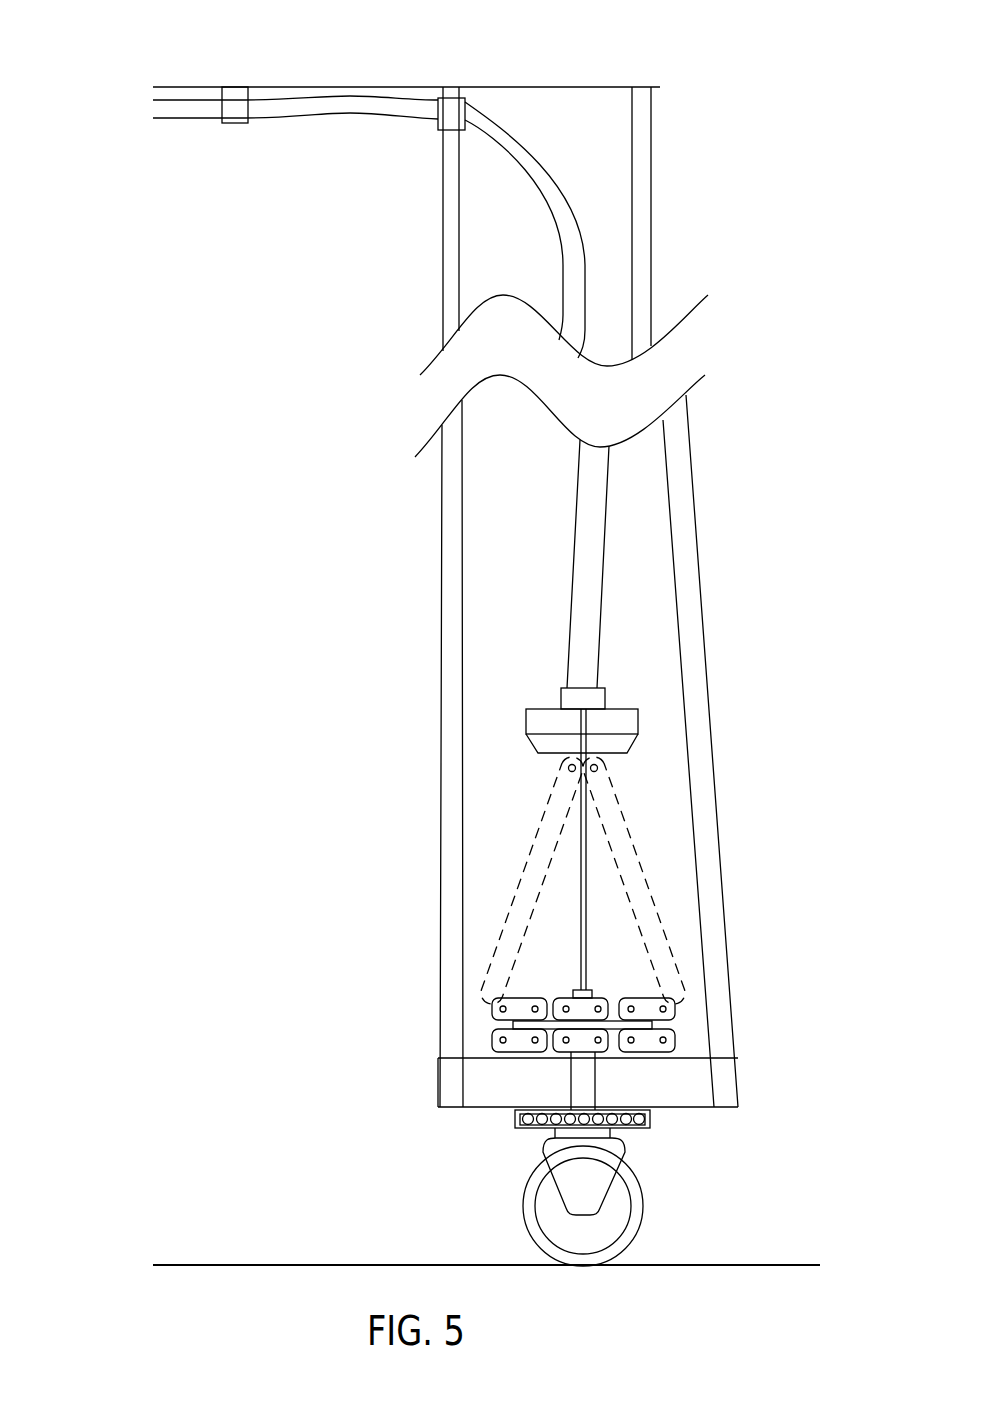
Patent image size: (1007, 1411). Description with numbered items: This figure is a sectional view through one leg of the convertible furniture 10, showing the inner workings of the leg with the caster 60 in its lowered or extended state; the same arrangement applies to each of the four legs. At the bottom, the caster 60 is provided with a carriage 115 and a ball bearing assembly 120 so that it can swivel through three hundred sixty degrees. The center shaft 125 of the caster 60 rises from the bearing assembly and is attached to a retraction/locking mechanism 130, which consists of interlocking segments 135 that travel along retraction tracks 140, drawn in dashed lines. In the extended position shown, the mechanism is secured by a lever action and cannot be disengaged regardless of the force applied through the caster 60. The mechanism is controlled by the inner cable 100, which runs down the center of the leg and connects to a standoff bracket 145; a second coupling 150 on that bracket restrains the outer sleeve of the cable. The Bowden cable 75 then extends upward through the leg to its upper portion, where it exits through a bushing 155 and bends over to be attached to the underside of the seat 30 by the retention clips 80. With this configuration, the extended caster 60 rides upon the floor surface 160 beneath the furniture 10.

The convertible furniture 10 is at (105, 180).
The seat 30 is at (343, 84).
The caster 60 is at (637, 1217).
The Bowden cable 75 is at (358, 107).
The retention clips 80 is at (235, 125).
The inner cable 100 is at (583, 900).
The carriage 115 is at (596, 1160).
The ball bearing assembly 120 is at (583, 1080).
The center shaft 125 is at (533, 1113).
The retraction/locking mechanism 130 is at (563, 1038).
The interlocking segments 135 is at (520, 1008).
The retraction tracks 140 is at (555, 818).
The standoff bracket 145 is at (625, 743).
The second coupling 150 is at (602, 690).
The bushing 155 is at (452, 113).
The floor surface 160 is at (385, 1265).